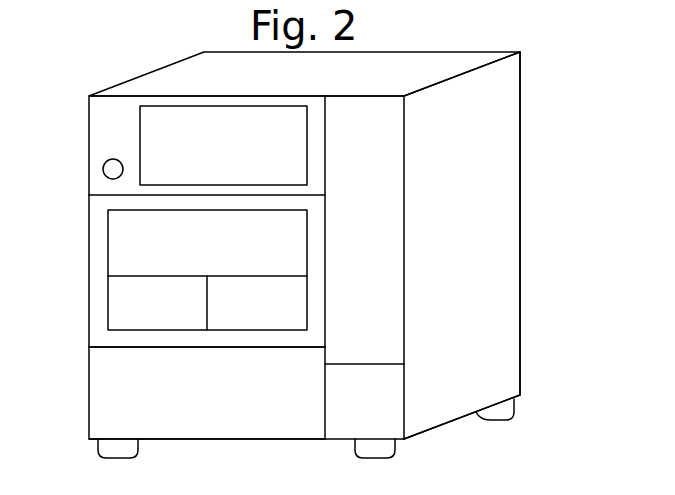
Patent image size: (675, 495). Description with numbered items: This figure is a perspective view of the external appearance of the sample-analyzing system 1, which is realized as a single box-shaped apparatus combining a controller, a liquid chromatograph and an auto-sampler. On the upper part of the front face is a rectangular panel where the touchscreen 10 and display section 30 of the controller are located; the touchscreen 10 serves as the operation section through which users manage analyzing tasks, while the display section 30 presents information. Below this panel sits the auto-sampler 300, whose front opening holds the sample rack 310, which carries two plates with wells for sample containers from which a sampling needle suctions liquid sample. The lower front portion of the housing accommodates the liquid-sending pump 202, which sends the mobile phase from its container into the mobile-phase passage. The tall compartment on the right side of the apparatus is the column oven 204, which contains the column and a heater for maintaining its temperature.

The sample-analyzing system 1 is at (90, 65).
The touchscreen 10 is at (223, 145).
The display section 30 is at (252, 161).
The auto-sampler 300 is at (98, 238).
The sample rack 310 is at (115, 305).
The liquid-sending pump 202 is at (96, 396).
The column oven 204 is at (382, 293).